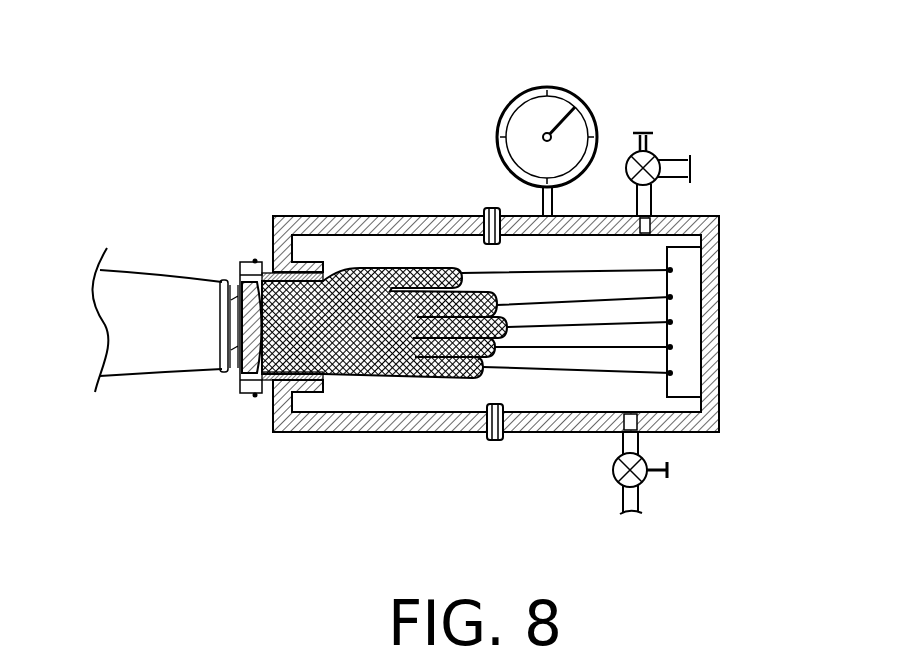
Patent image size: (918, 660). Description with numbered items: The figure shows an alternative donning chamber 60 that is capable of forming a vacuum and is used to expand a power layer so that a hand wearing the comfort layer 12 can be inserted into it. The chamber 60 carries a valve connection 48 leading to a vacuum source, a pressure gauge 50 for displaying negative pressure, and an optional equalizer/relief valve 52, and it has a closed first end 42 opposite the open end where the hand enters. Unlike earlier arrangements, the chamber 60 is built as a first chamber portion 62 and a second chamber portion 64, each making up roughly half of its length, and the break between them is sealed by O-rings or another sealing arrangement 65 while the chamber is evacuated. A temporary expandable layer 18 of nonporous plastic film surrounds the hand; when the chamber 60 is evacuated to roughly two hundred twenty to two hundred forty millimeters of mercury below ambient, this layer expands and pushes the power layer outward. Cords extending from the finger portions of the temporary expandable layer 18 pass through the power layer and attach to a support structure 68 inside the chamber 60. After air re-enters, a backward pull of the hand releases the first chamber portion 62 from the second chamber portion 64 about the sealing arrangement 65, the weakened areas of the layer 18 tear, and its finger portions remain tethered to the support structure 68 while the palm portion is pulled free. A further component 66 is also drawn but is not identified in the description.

The donning chamber 60 is at (296, 118).
The comfort layer 12 is at (236, 280).
The temporary expandable layer 18 is at (247, 280).
The clamp bracket 66 is at (253, 400).
The first end 42 is at (736, 393).
The first chamber portion 62 is at (337, 446).
The second chamber portion 64 is at (571, 454).
The sealing arrangement 65 is at (474, 201).
The support structure 68 is at (690, 277).
The pressure gauge 50 is at (568, 90).
The equalizer/relief valve 52 is at (656, 150).
The valve connection 48 is at (645, 486).